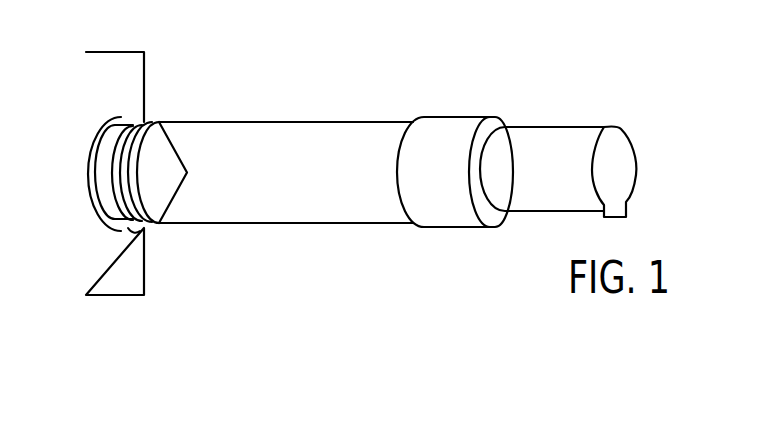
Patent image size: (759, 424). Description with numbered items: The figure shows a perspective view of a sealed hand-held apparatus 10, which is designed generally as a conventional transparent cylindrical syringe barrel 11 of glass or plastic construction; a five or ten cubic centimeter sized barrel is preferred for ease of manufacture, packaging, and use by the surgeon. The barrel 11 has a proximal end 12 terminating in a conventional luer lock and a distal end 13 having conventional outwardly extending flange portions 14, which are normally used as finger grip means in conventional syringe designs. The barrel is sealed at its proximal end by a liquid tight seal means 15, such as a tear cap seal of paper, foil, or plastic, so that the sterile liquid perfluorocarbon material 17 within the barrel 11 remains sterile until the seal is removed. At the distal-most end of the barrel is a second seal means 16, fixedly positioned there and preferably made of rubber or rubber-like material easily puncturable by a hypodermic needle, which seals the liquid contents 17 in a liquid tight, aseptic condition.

The hand-held apparatus 10 is at (280, 106).
The syringe barrel 11 is at (311, 223).
The proximal end 12 is at (462, 240).
The distal end 13 is at (137, 238).
The flange portions 14 is at (118, 52).
The liquid tight seal means 15 is at (620, 167).
The second seal means 16 is at (98, 170).
The liquid perfluorocarbon material 17 is at (293, 177).